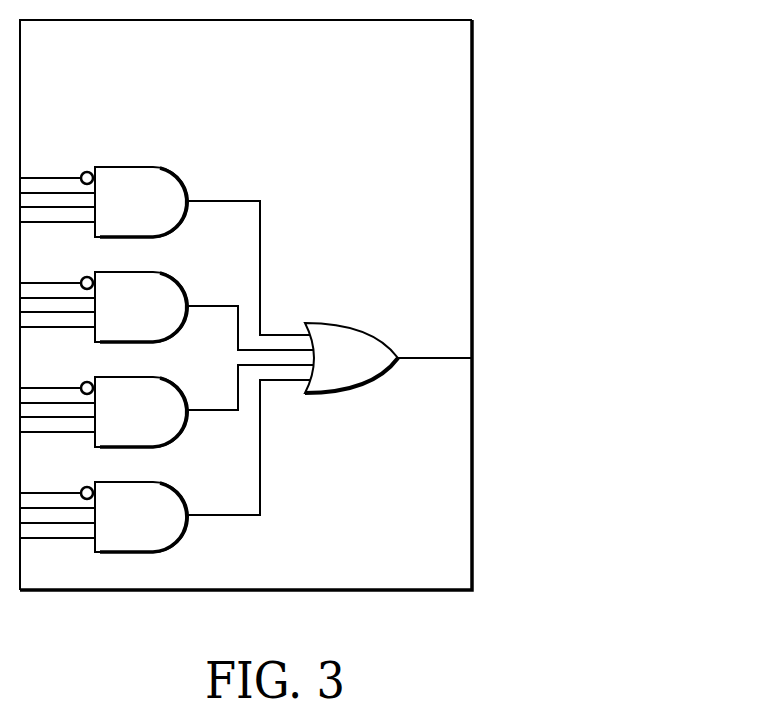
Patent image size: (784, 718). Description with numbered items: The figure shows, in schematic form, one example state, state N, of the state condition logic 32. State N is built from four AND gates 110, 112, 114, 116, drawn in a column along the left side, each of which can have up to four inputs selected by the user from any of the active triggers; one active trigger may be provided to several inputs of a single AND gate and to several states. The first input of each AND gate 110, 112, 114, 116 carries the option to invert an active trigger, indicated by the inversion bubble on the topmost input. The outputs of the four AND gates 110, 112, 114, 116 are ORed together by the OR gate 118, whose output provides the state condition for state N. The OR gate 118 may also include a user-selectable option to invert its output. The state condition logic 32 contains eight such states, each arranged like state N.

The state condition logic 32 is at (348, 299).
The AND gate 110 is at (152, 215).
The AND gate 112 is at (152, 320).
The AND gate 114 is at (152, 425).
The AND gate 116 is at (152, 530).
The OR gate 118 is at (370, 369).